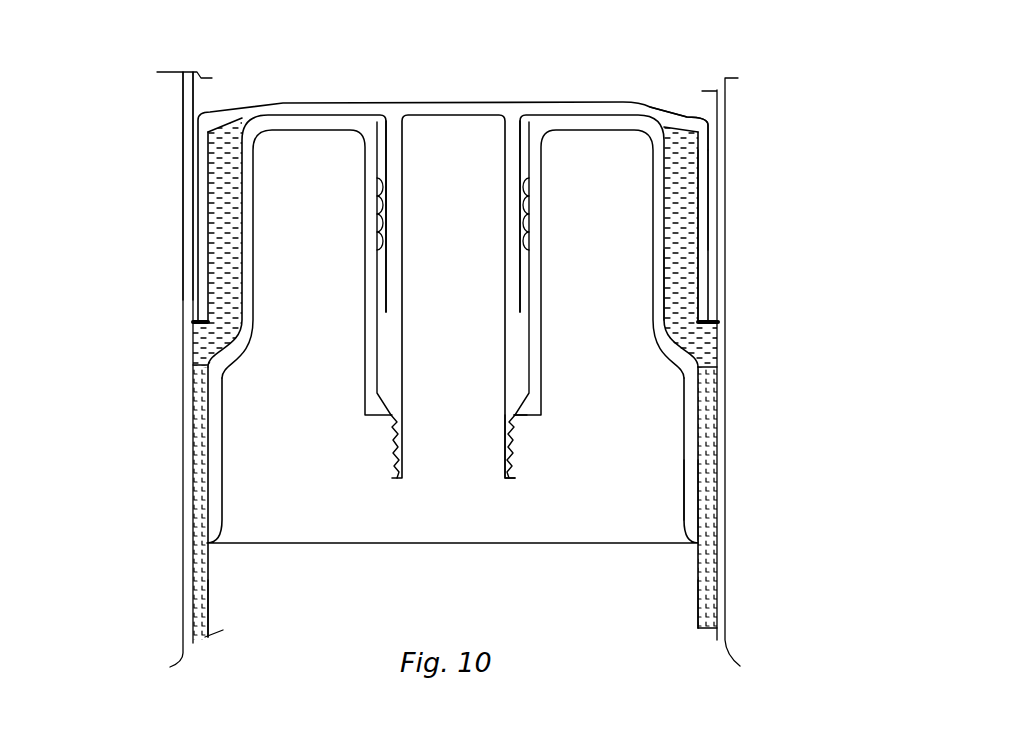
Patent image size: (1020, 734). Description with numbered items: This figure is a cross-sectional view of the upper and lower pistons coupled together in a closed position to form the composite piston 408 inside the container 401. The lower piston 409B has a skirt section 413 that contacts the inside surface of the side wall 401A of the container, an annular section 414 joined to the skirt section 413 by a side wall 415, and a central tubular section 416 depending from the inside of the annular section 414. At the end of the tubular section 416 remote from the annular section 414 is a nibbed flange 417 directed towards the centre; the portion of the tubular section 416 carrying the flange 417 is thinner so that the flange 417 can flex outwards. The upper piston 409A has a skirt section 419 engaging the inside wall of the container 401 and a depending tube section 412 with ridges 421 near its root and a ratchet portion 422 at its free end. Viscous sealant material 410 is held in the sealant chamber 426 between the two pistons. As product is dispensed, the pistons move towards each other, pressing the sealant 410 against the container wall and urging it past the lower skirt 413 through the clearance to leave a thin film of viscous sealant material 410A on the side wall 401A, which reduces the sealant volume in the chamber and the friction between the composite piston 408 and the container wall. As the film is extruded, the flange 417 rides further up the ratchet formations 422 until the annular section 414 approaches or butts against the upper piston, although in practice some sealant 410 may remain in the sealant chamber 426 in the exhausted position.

The container 401 is at (186, 539).
The side wall 401A is at (185, 422).
The composite piston 408 is at (192, 112).
The upper piston 409A is at (543, 101).
The lower piston 409B is at (657, 443).
The viscous sealant material 410 is at (233, 240).
The thin film of viscous sealant material 410A is at (207, 592).
The tube section 412 is at (400, 352).
The skirt section 413 is at (693, 502).
The annular section 414 is at (598, 123).
The side wall 415 is at (673, 303).
The central tubular section 416 is at (535, 337).
The nibbed flange 417 is at (529, 418).
The skirt section 419 is at (700, 196).
The ridges 421 is at (380, 220).
The ratchet portion 422 is at (513, 440).
The sealant chamber 426 is at (695, 148).